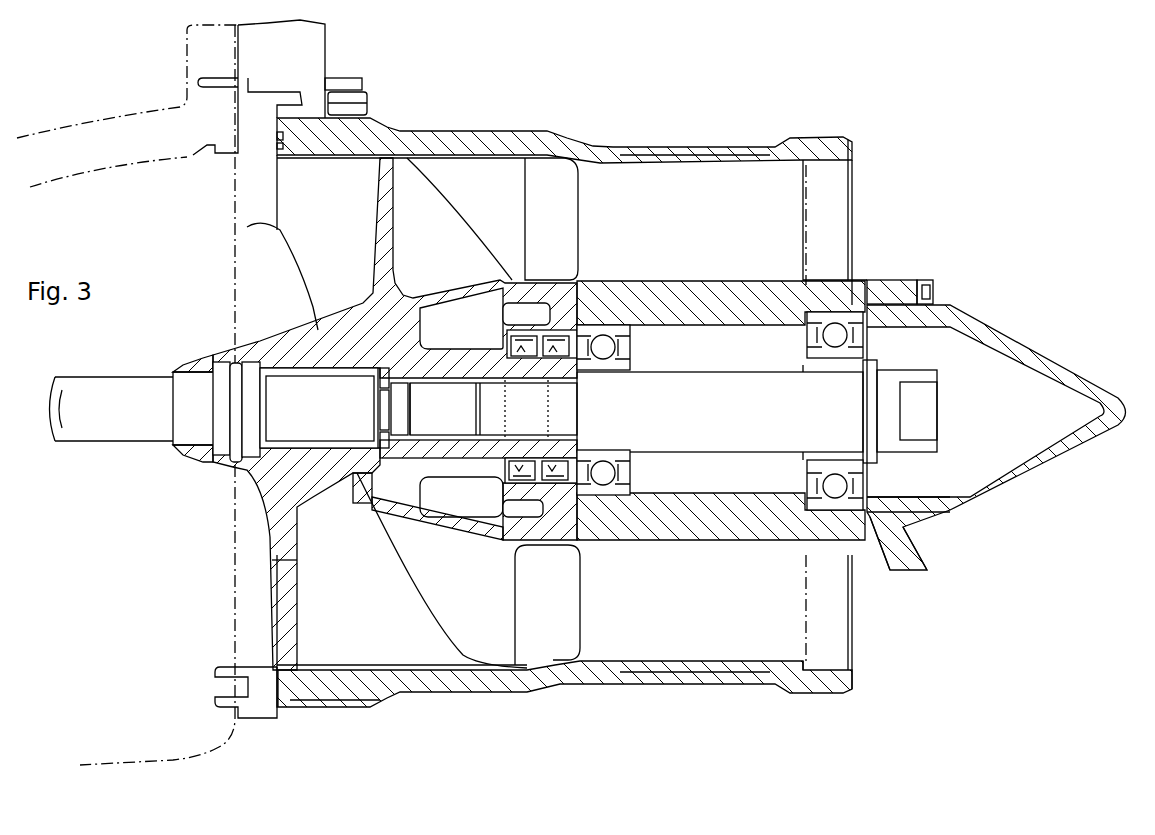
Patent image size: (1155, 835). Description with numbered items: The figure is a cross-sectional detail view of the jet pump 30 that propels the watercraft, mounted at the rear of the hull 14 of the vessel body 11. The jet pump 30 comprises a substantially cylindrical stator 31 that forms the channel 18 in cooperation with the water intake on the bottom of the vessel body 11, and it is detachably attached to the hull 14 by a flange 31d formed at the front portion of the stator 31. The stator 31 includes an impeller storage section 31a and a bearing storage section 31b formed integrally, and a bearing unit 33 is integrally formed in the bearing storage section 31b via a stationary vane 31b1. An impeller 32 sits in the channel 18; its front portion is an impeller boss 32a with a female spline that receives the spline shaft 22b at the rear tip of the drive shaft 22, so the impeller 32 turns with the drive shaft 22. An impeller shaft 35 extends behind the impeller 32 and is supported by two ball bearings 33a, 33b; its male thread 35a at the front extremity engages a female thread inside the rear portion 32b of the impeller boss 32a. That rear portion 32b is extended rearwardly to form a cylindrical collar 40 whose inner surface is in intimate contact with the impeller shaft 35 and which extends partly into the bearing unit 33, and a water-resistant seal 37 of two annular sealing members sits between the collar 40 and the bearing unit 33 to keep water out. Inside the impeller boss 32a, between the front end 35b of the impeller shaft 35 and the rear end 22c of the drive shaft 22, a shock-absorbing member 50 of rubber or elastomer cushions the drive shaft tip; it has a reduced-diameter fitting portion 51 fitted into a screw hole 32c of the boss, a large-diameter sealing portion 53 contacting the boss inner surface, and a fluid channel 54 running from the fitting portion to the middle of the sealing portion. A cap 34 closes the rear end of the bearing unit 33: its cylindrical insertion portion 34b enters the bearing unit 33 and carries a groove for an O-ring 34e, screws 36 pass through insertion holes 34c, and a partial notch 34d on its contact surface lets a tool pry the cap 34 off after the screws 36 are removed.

The vessel body 11 is at (127, 106).
The hull 14 is at (130, 137).
The channel 18 is at (338, 196).
The drive shaft 22 is at (128, 427).
The spline shaft 22b is at (320, 327).
The rear end of the drive shaft 22c is at (378, 398).
The jet pump 30 is at (647, 117).
The stator 31 is at (565, 697).
The impeller storage section 31a is at (357, 718).
The bearing storage section 31b is at (717, 695).
The stationary vane 31b1 is at (730, 190).
The flange 31d is at (263, 707).
The impeller 32 is at (462, 608).
The impeller boss 32a is at (300, 487).
The rear portion of the impeller boss 32b is at (457, 363).
The screw hole 32c is at (407, 397).
The bearing unit 33 is at (663, 527).
The ball bearing 33a is at (613, 330).
The ball bearing 33b is at (783, 313).
The cap 34 is at (1027, 357).
The insertion portion 34b is at (885, 515).
The insertion hole 34c is at (907, 283).
The notch 34d is at (905, 512).
The O-ring 34e is at (893, 515).
The impeller shaft 35 is at (697, 407).
The male thread 35a is at (443, 447).
The front end of the impeller shaft 35b is at (422, 440).
The screw 36 is at (930, 280).
The water-resistant seal 37 is at (527, 493).
The collar 40 is at (562, 430).
The shock-absorbing member 50 is at (383, 453).
The reduced-diameter fitting portion 51 is at (408, 403).
The large-diameter sealing portion 53 is at (386, 366).
The fluid channel 54 is at (380, 418).